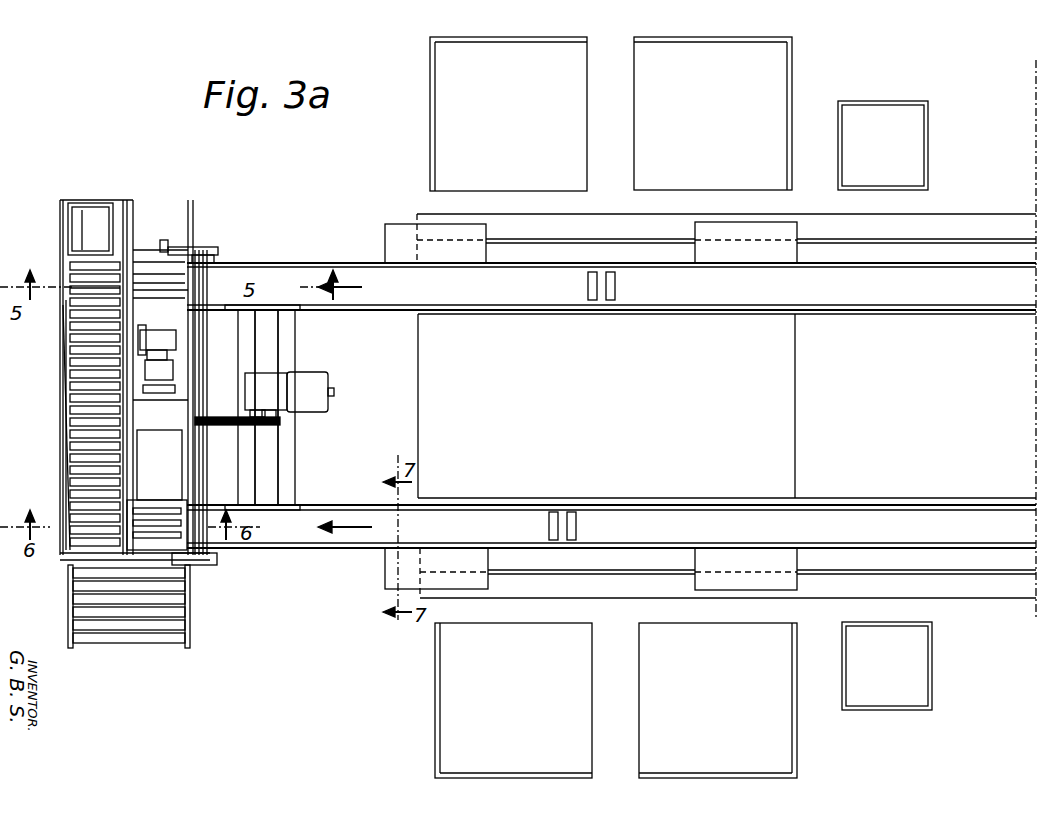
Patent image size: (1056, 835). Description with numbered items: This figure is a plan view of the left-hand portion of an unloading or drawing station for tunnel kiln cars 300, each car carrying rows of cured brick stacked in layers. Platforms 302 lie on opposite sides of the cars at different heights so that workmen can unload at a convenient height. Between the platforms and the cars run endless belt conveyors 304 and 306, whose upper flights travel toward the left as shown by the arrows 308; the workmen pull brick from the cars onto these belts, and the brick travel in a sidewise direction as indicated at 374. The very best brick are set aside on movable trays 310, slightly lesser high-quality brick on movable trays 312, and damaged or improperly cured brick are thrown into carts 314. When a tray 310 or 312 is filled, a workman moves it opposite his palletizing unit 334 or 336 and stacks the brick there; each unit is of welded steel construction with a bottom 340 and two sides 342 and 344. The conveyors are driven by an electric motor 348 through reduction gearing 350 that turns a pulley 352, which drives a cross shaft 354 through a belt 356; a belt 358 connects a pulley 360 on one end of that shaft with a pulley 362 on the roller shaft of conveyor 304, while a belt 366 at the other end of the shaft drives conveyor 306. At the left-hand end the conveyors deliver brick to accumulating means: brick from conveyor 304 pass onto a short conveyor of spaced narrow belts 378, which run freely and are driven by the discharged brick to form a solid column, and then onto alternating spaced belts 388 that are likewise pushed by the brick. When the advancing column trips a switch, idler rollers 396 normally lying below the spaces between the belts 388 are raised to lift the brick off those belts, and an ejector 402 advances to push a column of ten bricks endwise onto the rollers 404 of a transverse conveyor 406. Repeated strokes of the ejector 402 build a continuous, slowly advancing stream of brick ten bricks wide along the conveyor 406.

The tunnel kiln car 300 is at (420, 350).
The platform 302 is at (634, 222).
The conveyor 304 is at (283, 267).
The conveyor 306 is at (284, 540).
The arrow 308 is at (362, 287).
The movable tray 310 is at (400, 230).
The movable tray 312 is at (775, 228).
The cart 314 is at (905, 101).
The palletizing unit 334 is at (610, 407).
The palletizing unit 336 is at (792, 66).
The bottom 340 is at (610, 406).
The side 342 is at (610, 407).
The side 344 is at (610, 406).
The electric motor 348 is at (312, 374).
The reduction gearing 350 is at (258, 380).
The pulley 352 is at (268, 425).
The cross shaft 354 is at (205, 495).
The belt 356 is at (225, 425).
The belt 358 is at (185, 248).
The pulley 360 is at (218, 255).
The pulley 362 is at (162, 252).
The belt 366 is at (198, 565).
The sidewise direction of brick travel 374 is at (610, 300).
The spaced narrow belts 378 is at (172, 268).
The spaced belts 388 is at (88, 268).
The idler rollers 396 is at (75, 302).
The ejector 402 is at (72, 258).
The rollers 404 is at (70, 352).
The transverse conveyor 406 is at (62, 382).